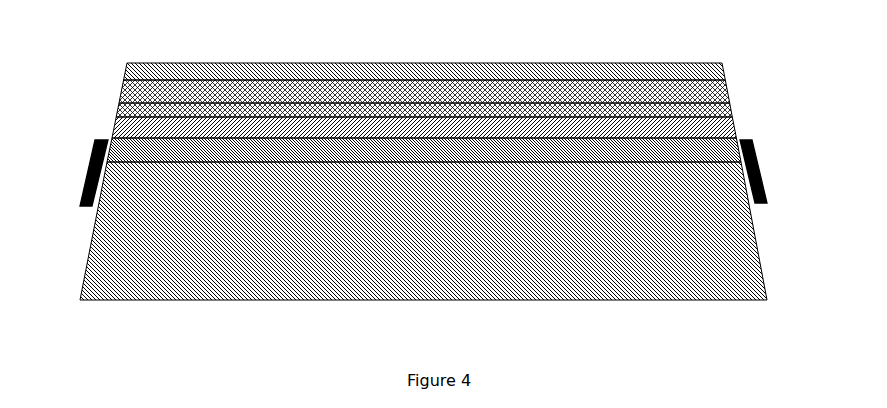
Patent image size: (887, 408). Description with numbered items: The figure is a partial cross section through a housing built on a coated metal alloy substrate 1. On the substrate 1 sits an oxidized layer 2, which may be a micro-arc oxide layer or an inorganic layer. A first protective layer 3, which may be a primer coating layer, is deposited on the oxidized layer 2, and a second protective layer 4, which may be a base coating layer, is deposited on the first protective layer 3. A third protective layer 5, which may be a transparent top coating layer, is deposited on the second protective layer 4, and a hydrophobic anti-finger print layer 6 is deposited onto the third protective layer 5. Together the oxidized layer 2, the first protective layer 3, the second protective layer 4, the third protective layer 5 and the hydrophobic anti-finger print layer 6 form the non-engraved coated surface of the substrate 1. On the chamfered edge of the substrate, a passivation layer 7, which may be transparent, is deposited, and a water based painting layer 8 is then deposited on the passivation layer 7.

The metal alloy substrate 1 is at (745, 265).
The oxidized layer 2 is at (755, 228).
The first protective layer 3 is at (738, 128).
The second protective layer 4 is at (733, 110).
The third protective layer 5 is at (728, 93).
The hydrophobic anti-finger print layer 6 is at (722, 72).
The passivation layer 7 is at (88, 178).
The water based painting layer 8 is at (752, 148).